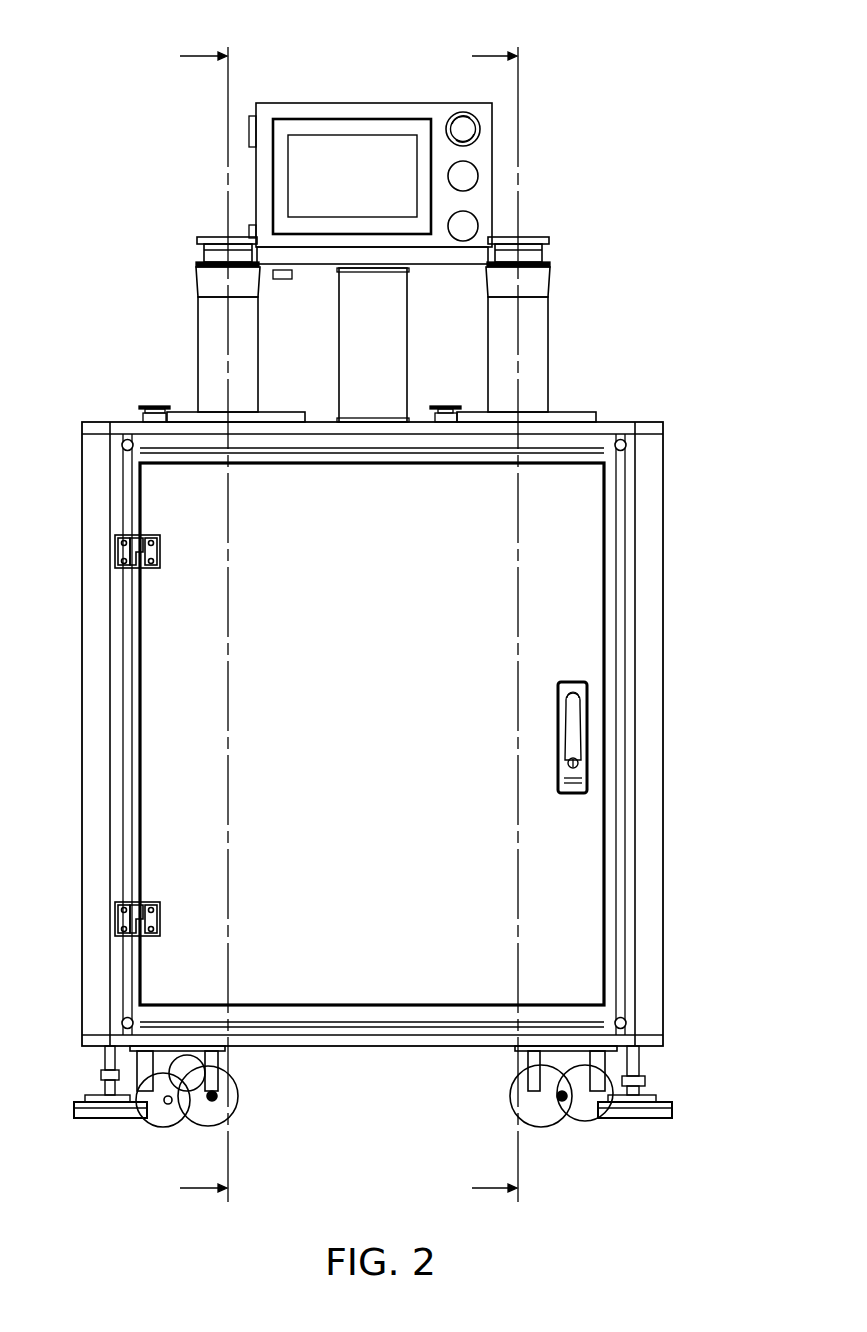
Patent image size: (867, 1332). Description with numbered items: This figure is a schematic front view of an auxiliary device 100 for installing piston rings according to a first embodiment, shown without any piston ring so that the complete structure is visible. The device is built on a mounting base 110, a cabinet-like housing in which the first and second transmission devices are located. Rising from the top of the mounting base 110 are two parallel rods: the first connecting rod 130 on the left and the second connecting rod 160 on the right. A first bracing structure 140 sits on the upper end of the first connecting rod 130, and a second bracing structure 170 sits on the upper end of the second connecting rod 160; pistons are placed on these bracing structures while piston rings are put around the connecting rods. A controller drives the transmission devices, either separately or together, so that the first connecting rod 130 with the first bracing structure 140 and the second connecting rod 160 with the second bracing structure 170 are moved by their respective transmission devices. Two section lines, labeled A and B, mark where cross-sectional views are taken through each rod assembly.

The auxiliary device for installing piston rings 100 is at (85, 58).
The mounting base 110 is at (580, 562).
The first connecting rod 130 is at (208, 365).
The first bracing structure 140 is at (208, 288).
The second connecting rod 160 is at (537, 367).
The second bracing structure 170 is at (537, 288).